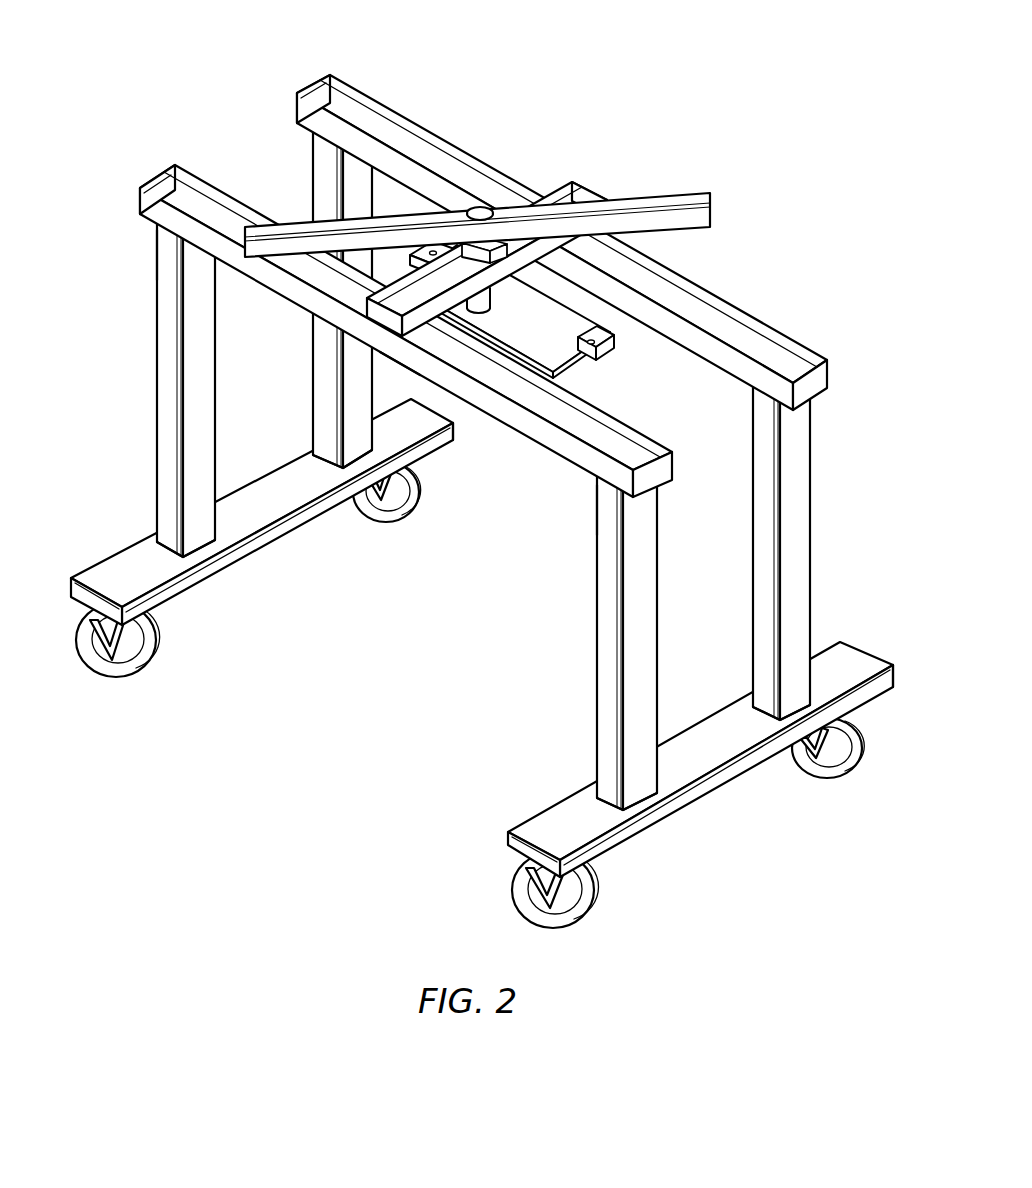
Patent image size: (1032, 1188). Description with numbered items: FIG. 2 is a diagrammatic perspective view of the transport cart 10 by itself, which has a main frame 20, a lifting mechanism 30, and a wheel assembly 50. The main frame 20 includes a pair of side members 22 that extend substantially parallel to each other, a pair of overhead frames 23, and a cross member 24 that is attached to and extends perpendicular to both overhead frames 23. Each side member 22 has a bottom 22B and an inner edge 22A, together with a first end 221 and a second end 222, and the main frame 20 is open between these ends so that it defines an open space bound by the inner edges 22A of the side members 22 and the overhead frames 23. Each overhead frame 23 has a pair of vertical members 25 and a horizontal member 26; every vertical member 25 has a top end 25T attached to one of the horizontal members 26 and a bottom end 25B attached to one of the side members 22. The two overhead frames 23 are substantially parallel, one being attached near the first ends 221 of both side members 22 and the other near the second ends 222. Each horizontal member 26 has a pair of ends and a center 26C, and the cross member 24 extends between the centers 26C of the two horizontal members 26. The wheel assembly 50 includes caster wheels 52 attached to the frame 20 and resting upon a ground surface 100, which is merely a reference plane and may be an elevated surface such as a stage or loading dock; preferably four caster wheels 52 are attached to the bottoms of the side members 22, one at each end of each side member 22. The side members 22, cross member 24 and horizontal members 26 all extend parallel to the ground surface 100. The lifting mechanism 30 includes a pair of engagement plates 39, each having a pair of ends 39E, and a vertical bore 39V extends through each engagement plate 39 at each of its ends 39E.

The transport cart 10 is at (262, 420).
The main frame 20 is at (595, 505).
The side member 22 is at (477, 634).
The inner edge 22A is at (507, 650).
The bottom 22B is at (482, 629).
The first end of base member 221 is at (311, 693).
The second end of base member 222 is at (662, 539).
The overhead frame 23 is at (392, 296).
The cross member 24 is at (487, 226).
The vertical member 25 is at (446, 501).
The top end 25T is at (345, 382).
The bottom end 25B is at (483, 663).
The horizontal member 26 is at (565, 252).
The center 26C is at (443, 429).
The lifting mechanism 30 is at (477, 200).
The engagement plate 39 is at (587, 323).
The vertical bore 39V is at (588, 215).
The end 39E is at (675, 313).
The wheel assembly 50 is at (448, 686).
The caster wheel 52 is at (470, 695).
The ground surface 100 is at (432, 680).